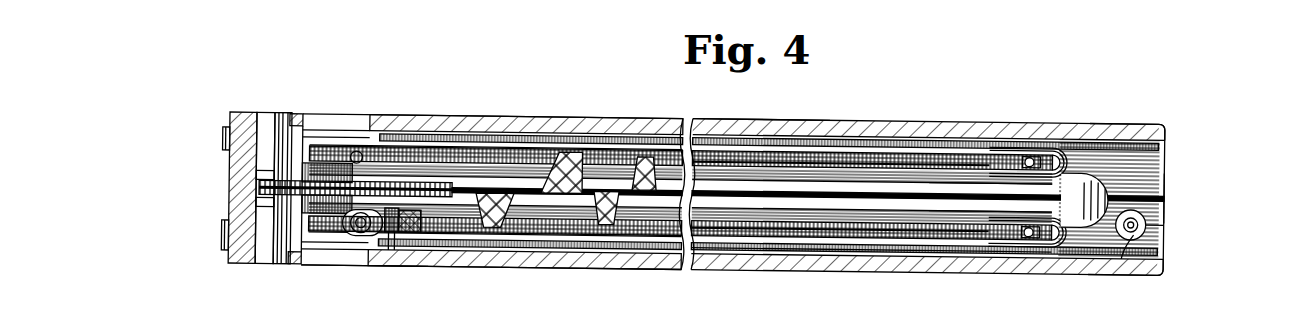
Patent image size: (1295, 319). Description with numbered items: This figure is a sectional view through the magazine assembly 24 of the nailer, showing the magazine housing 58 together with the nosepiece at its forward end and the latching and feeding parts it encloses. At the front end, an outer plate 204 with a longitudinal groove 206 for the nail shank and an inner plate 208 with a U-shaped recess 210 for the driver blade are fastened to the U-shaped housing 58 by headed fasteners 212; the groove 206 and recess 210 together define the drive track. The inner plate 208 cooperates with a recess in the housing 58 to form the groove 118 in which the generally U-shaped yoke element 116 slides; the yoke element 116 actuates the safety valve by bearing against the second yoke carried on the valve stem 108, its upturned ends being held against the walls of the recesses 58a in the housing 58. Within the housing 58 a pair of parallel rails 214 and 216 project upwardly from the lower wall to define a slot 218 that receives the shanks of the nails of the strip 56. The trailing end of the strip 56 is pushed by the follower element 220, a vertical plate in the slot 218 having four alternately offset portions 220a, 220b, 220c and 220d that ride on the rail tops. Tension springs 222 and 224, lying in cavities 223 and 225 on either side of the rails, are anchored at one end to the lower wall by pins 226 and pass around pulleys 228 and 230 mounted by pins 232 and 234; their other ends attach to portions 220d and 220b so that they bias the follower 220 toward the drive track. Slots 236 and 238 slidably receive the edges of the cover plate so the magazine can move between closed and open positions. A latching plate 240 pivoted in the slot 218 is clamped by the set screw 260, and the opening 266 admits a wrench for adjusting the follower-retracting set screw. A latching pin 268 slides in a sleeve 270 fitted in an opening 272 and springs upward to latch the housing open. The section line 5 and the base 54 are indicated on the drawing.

The section line 5- 5 is at (404, 313).
The magazine assembly 24 is at (1000, 78).
The nut 54 is at (355, 195).
The strip 56 is at (350, 168).
The magazine housing 58 is at (760, 115).
The recesses 58a is at (370, 262).
The valve stem 108 is at (820, 312).
The yoke element 116 is at (286, 262).
The grooves 118 is at (298, 113).
The outer plate 204 is at (240, 258).
The groove 206 is at (255, 184).
The inner plate 208 is at (285, 112).
The recess 210 is at (258, 176).
The headed fasteners 212 is at (225, 135).
The rail 214 is at (1040, 190).
The rail 216 is at (945, 208).
The slot 218 is at (850, 190).
The follower element 220 is at (532, 200).
The offset portion 220a is at (487, 228).
The offset portion 220b is at (593, 228).
The offset portion 220c is at (574, 150).
The offset portion 220d is at (640, 152).
The tension spring 222 is at (780, 155).
The cavity 223 is at (955, 150).
The tension spring 224 is at (845, 240).
The cavity 225 is at (805, 243).
The pins 226 is at (1032, 163).
The pulley 228 is at (440, 143).
The pulley 230 is at (408, 238).
The pin 232 is at (410, 135).
The pin 234 is at (378, 232).
The slot 236 is at (1168, 250).
The slot 238 is at (1172, 140).
The latching plate 240 is at (1165, 172).
The set screw 260 is at (1088, 186).
The opening 266 is at (358, 150).
The latching pin 268 is at (1150, 230).
The sleeve 270 is at (1165, 218).
The opening 272 is at (1123, 248).